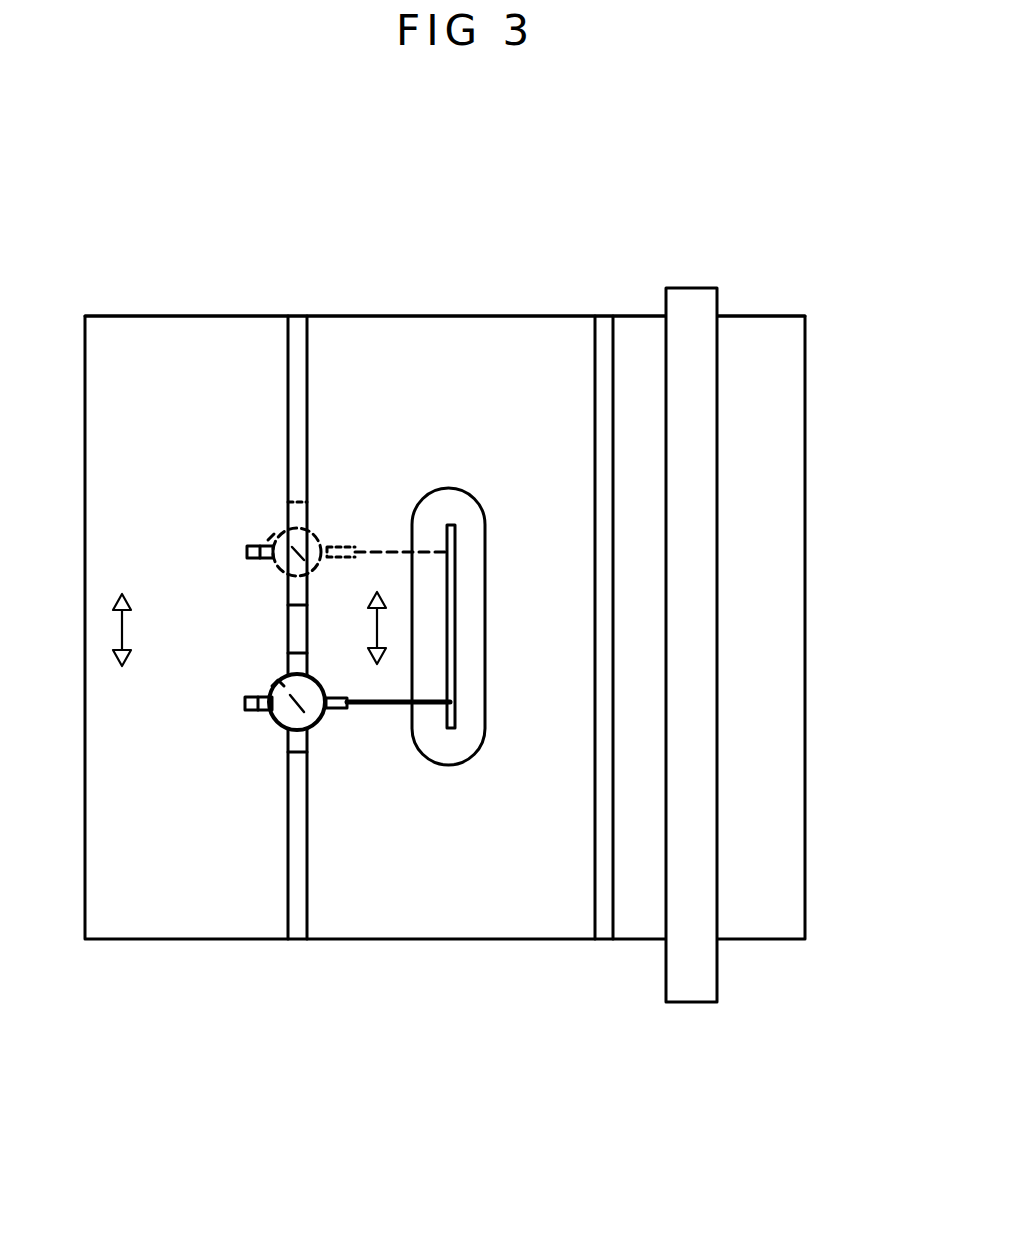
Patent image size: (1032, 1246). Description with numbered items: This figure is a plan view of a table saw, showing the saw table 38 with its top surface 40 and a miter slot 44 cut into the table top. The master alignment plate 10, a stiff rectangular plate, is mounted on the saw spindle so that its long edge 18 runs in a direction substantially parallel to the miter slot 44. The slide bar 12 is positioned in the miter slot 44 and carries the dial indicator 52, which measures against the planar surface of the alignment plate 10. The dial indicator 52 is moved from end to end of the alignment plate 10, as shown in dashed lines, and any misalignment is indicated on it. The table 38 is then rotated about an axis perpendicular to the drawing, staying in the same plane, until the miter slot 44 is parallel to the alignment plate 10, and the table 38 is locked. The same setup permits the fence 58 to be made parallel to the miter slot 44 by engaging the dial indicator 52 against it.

The alignment plate 10 is at (453, 600).
The slide bar 12 is at (287, 740).
The long edge 18 is at (453, 675).
The saw table 38 is at (187, 316).
The top surface 40 is at (162, 913).
The miter slot 44 is at (297, 885).
The dial indicator 52 is at (282, 678).
The fence 58 is at (720, 443).